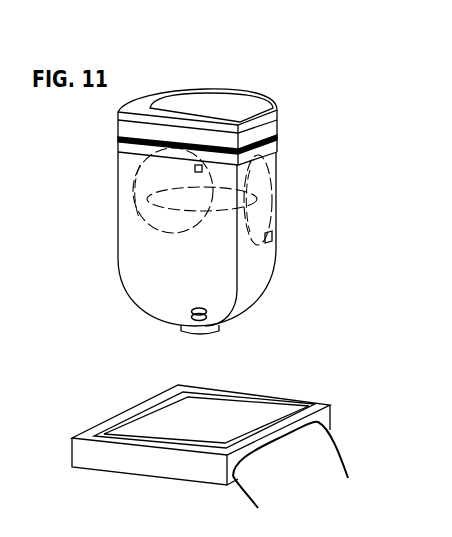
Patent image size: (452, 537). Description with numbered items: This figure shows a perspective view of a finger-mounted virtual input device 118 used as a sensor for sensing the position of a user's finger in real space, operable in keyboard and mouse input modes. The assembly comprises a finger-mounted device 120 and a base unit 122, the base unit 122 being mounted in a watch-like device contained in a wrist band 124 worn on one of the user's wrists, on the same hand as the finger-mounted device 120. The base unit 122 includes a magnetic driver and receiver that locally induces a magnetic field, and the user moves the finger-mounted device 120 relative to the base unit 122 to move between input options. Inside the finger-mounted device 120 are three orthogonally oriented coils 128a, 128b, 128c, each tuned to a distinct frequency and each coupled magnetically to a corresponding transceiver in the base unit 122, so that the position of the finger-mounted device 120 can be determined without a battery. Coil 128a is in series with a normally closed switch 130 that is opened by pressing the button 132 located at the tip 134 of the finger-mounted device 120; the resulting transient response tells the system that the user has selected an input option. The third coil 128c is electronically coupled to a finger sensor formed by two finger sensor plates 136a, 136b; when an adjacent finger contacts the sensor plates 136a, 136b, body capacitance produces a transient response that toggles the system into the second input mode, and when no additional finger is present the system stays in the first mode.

The attachment device 118 is at (250, 72).
The finger-mounted device 120 is at (163, 270).
The base unit 122 is at (257, 413).
The wrist band 124 is at (327, 477).
The coil 128a is at (266, 183).
The coil 128b is at (258, 206).
The coil 128c is at (131, 187).
The normally closed switch 130 is at (210, 309).
The button 132 is at (220, 337).
The tip 134 is at (172, 323).
The finger sensor plate 136a is at (272, 124).
The finger sensor plate 136b is at (275, 145).